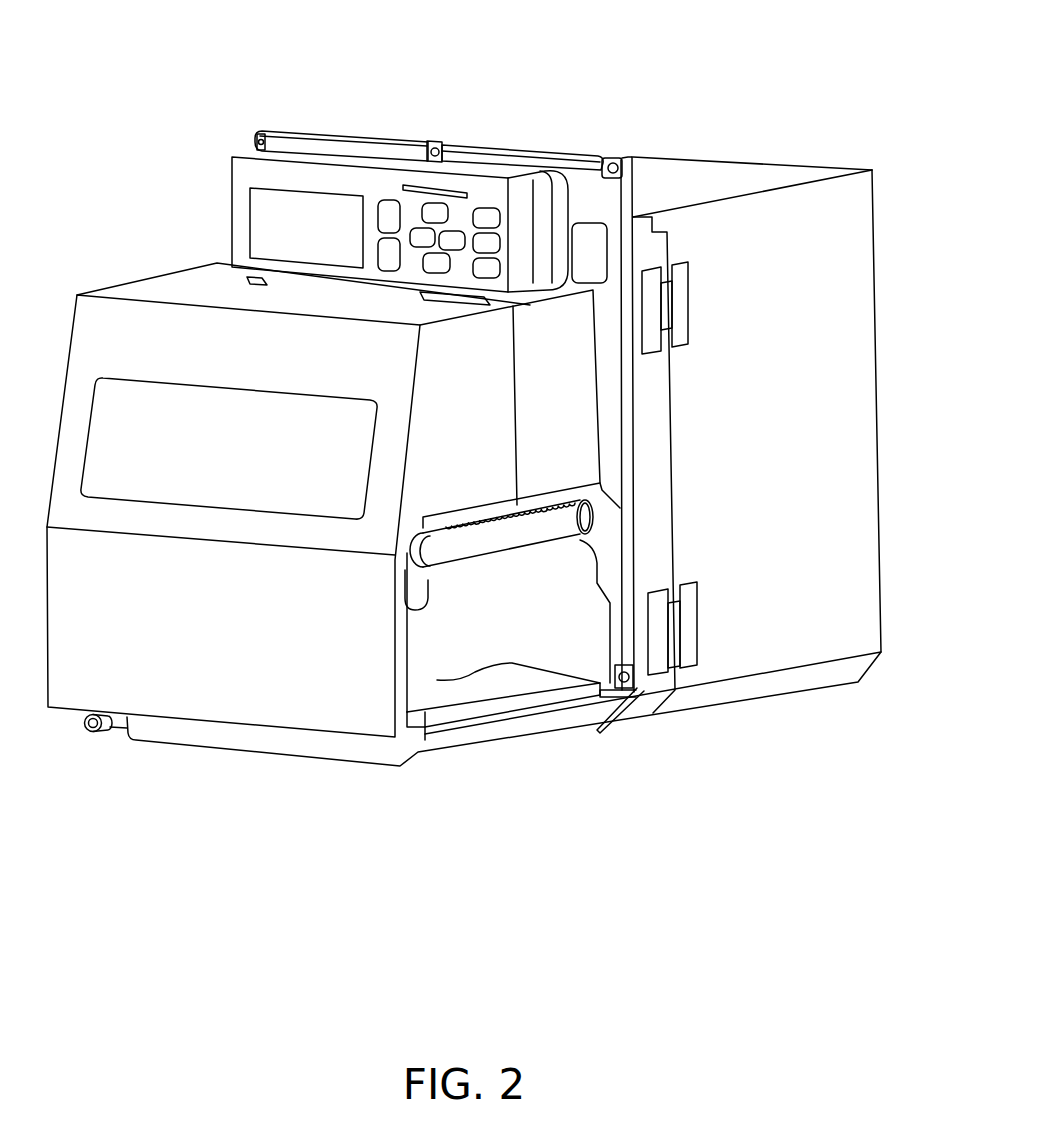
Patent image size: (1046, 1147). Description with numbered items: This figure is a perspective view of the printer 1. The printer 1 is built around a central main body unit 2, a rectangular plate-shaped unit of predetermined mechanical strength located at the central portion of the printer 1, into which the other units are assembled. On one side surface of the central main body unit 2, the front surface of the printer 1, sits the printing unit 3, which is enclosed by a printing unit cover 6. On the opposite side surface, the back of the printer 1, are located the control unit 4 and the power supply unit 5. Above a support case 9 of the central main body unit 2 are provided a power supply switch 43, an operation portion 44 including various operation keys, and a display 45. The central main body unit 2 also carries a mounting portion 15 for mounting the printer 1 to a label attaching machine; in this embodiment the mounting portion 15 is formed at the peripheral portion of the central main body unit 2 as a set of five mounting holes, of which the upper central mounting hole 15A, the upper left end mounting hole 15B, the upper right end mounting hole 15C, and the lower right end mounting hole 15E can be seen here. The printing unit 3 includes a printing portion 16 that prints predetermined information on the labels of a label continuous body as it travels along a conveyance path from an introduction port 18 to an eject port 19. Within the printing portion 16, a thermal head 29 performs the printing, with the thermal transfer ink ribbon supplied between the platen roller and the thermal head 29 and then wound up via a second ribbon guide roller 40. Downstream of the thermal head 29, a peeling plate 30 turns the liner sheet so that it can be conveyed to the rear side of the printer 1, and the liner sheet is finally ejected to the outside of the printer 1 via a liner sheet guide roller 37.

The printer 1 is at (677, 86).
The central main body unit 2 is at (393, 138).
The printing unit 3 is at (359, 778).
The control unit 4 is at (535, 141).
The power supply unit 5 is at (746, 163).
The printing unit cover 6 is at (72, 328).
The support case 9 is at (603, 397).
The mounting portion 15 is at (249, 128).
The upper central mounting hole 15A is at (438, 143).
The upper left end mounting hole 15B is at (261, 131).
The upper right end mounting hole 15C is at (613, 158).
The lower right end mounting hole 15E is at (628, 722).
The printing portion 16 is at (441, 731).
The introduction port 18 is at (77, 720).
The eject port 19 is at (458, 704).
The thermal head 29 is at (569, 694).
The peeling plate 30 is at (533, 713).
The liner sheet guide roller 37 is at (110, 727).
The second ribbon guide roller 40 is at (566, 519).
The power supply switch 43 is at (592, 245).
The operation portion 44 is at (409, 275).
The display 45 is at (268, 206).